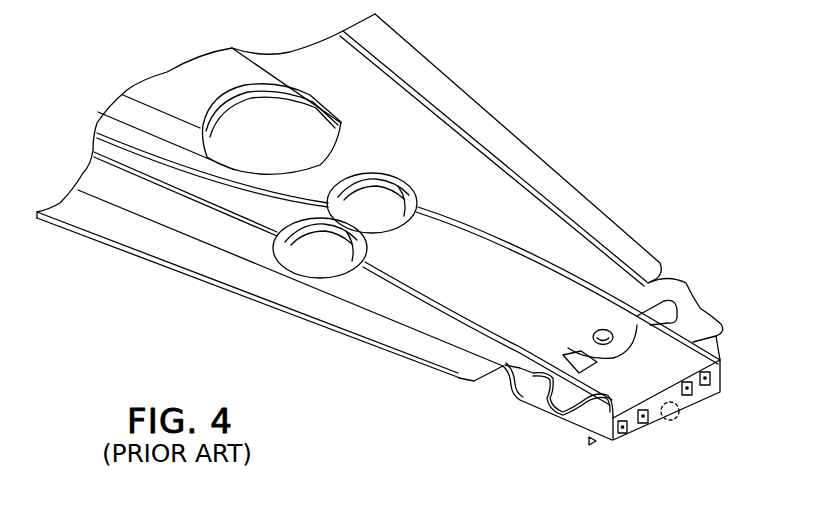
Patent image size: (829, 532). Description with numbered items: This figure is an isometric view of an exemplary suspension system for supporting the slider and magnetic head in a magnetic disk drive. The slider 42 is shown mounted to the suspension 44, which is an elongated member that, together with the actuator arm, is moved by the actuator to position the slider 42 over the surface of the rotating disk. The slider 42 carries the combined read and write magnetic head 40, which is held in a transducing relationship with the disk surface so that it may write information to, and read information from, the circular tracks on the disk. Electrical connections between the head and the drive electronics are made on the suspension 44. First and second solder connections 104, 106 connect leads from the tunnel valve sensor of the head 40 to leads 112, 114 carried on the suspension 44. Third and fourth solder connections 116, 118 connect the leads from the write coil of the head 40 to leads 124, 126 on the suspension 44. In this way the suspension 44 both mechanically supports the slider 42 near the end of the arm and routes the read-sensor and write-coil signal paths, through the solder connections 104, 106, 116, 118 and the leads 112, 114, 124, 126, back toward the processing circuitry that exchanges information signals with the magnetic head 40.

The magnetic head 40 is at (676, 420).
The slider 42 is at (563, 437).
The suspension 44 is at (514, 139).
The first solder connection 104 is at (618, 432).
The second solder connection 106 is at (712, 378).
The lead 112 is at (388, 285).
The lead 114 is at (572, 273).
The third solder connection 116 is at (643, 423).
The fourth solder connection 118 is at (693, 398).
The lead 124 is at (437, 306).
The lead 126 is at (498, 238).